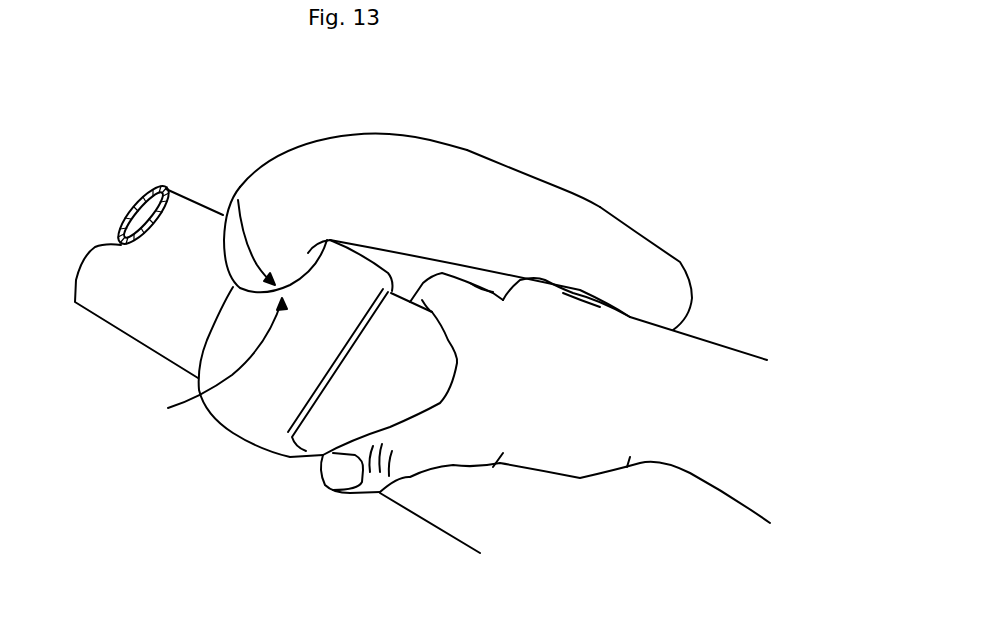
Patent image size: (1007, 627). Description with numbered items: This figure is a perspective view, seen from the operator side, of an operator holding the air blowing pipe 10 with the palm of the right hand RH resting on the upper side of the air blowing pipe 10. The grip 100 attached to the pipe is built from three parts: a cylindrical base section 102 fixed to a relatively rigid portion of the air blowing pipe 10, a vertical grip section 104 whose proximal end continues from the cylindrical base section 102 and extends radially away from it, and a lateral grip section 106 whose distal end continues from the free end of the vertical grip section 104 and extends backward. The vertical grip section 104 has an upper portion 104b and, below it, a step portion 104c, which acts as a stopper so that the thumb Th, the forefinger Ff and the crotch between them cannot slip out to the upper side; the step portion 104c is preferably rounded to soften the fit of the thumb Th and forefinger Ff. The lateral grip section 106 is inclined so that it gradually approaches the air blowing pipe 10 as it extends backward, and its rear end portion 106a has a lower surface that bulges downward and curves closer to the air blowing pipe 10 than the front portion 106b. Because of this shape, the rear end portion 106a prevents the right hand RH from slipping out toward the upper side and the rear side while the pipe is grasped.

The grip 100 is at (415, 292).
The cylindrical base section 102 is at (230, 427).
The vertical grip section 104 is at (253, 279).
The upper portion 104b is at (238, 200).
The step portion 104c is at (200, 364).
The lateral grip section 106 is at (478, 210).
The rear end portion 106a is at (662, 273).
The front portion 106b is at (552, 197).
The air blowing pipe 10 is at (113, 325).
The forefinger Ff is at (440, 285).
The thumb Th is at (407, 467).
The right hand RH is at (697, 443).